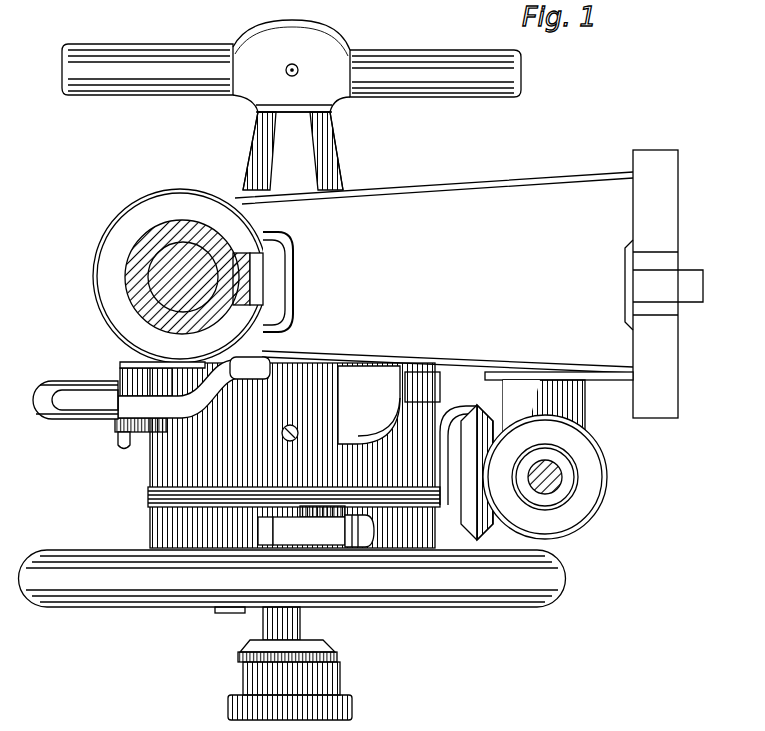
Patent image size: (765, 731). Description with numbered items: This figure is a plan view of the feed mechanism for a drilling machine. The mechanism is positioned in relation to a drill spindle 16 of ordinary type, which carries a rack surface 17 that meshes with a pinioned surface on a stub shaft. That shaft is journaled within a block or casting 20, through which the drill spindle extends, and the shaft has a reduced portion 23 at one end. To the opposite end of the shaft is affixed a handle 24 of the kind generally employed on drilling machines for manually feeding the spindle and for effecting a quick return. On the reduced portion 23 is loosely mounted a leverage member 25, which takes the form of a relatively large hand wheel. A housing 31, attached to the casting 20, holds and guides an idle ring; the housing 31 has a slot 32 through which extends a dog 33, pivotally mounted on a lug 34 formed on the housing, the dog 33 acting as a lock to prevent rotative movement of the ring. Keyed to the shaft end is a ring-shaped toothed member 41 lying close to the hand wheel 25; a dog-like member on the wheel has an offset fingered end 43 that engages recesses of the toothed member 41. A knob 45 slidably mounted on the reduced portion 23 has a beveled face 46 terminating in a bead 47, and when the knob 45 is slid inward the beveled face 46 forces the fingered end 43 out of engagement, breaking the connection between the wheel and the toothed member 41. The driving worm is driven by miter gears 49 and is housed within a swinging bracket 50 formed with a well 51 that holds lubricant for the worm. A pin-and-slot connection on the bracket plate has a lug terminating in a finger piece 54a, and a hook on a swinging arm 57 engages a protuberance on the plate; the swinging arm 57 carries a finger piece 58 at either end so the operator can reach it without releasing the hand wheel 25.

The handle 24 is at (382, 50).
The block 20 is at (469, 284).
The drill spindle 16 is at (140, 248).
The rack surface 17 is at (260, 278).
The housing 31 is at (277, 455).
The swinging arm 57 is at (215, 372).
The finger piece 58 is at (262, 364).
The finger piece 54a is at (45, 411).
The well 51 is at (352, 433).
The lug 34 is at (343, 546).
The slot 32 is at (257, 530).
The dog 33 is at (323, 531).
The swinging bracket 50 is at (465, 477).
The miter gears 49 is at (597, 509).
The leverage member 25 is at (566, 591).
The toothed member 41 is at (215, 609).
The reduced portion 23 is at (263, 628).
The fingered end 43 is at (305, 624).
The bead 47 is at (240, 656).
The beveled face 46 is at (335, 646).
The knob 45 is at (343, 687).